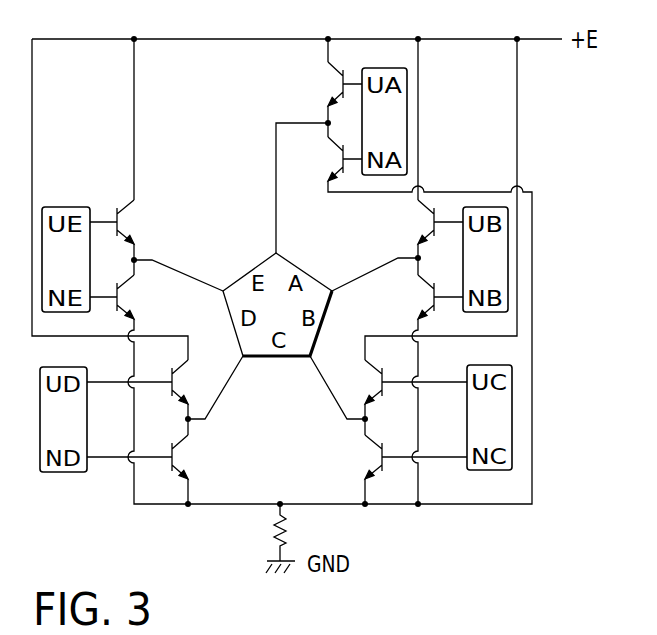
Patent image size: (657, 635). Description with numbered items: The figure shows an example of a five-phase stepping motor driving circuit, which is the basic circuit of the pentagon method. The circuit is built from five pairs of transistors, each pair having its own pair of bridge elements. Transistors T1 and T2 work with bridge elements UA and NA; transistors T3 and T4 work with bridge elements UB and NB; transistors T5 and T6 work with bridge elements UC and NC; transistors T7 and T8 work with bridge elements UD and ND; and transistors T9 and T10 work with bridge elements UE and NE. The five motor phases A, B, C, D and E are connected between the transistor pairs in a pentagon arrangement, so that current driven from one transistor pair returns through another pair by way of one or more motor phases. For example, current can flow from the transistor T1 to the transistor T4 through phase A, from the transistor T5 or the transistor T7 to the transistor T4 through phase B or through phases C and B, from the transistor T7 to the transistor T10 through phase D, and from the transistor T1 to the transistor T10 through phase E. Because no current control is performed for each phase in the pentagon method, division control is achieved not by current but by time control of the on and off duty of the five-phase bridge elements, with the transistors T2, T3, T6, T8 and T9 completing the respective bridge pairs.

The transistor T1 is at (337, 84).
The transistor T2 is at (337, 159).
The transistor T3 is at (428, 220).
The transistor T4 is at (428, 295).
The transistor T5 is at (378, 386).
The transistor T6 is at (377, 455).
The transistor T7 is at (176, 381).
The transistor T8 is at (176, 456).
The transistor T9 is at (121, 221).
The transistor T10 is at (121, 296).